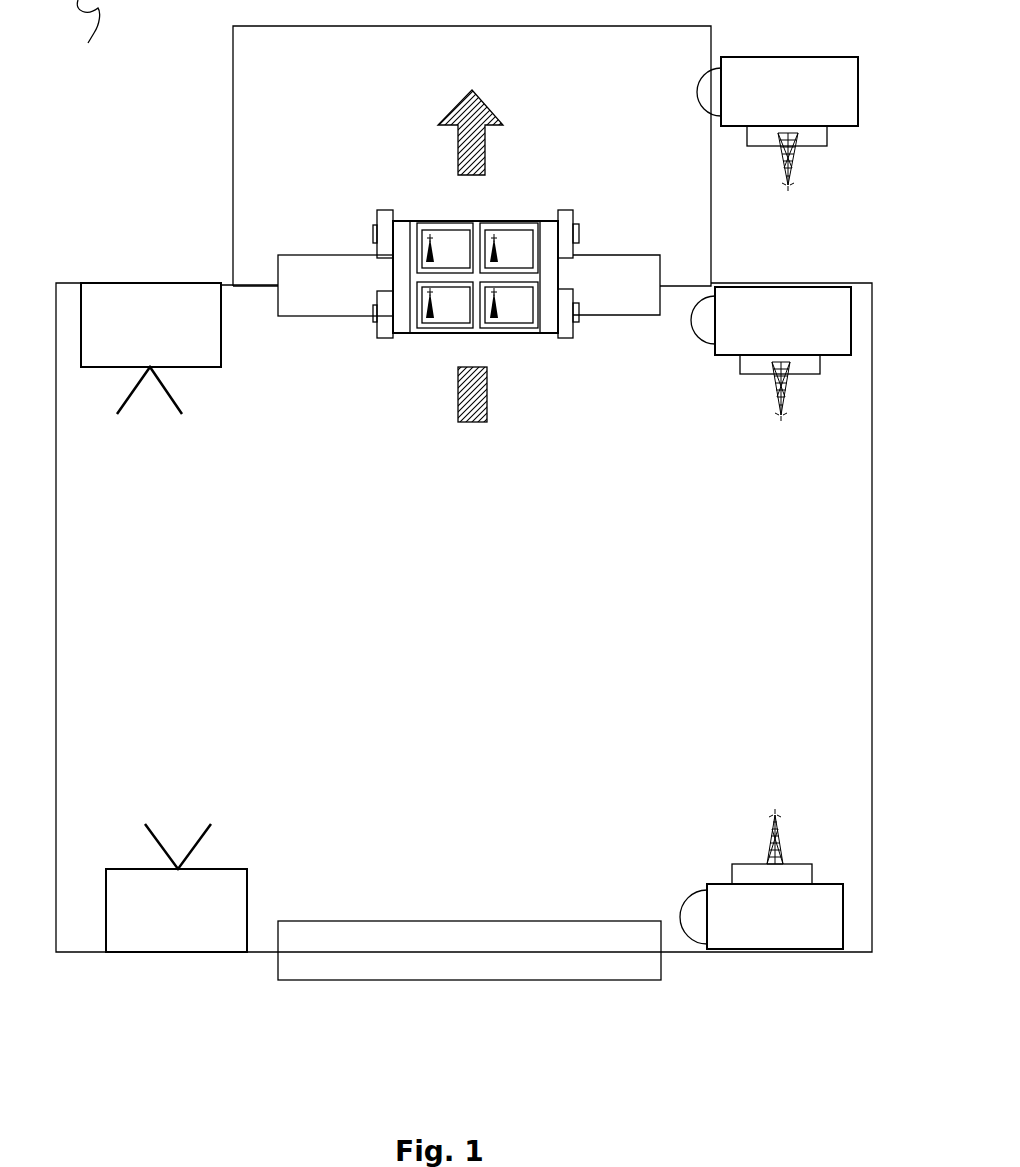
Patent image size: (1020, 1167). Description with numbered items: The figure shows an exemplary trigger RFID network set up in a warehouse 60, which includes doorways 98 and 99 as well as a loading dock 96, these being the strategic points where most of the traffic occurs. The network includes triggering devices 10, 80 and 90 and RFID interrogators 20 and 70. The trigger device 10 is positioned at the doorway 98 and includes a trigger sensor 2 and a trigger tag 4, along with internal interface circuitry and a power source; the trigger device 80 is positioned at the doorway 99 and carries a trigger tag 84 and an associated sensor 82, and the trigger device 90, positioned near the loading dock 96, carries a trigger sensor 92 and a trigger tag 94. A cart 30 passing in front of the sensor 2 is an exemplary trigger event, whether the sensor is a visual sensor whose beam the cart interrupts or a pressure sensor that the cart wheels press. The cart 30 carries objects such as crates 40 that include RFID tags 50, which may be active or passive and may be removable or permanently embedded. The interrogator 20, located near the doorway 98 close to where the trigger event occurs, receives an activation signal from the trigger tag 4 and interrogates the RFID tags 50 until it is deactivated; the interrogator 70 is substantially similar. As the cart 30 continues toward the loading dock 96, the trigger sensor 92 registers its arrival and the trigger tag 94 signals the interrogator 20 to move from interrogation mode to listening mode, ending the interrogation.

The trigger sensor 2 is at (712, 293).
The trigger tag 4 is at (792, 400).
The trigger device 10 is at (807, 288).
The interrogator 20 is at (200, 367).
The cart 30 is at (387, 278).
The crates 40 is at (508, 226).
The RFID tags 50 is at (497, 262).
The warehouse 60 is at (56, 550).
The interrogator 70 is at (230, 869).
The trigger device 80 is at (835, 903).
The interface port 82 is at (698, 892).
The trigger tag 84 is at (783, 843).
The trigger device 90 is at (810, 57).
The trigger sensor 92 is at (713, 67).
The trigger tag 94 is at (795, 168).
The loading dock 96 is at (337, 110).
The doorway 98 is at (330, 316).
The doorway 99 is at (345, 921).